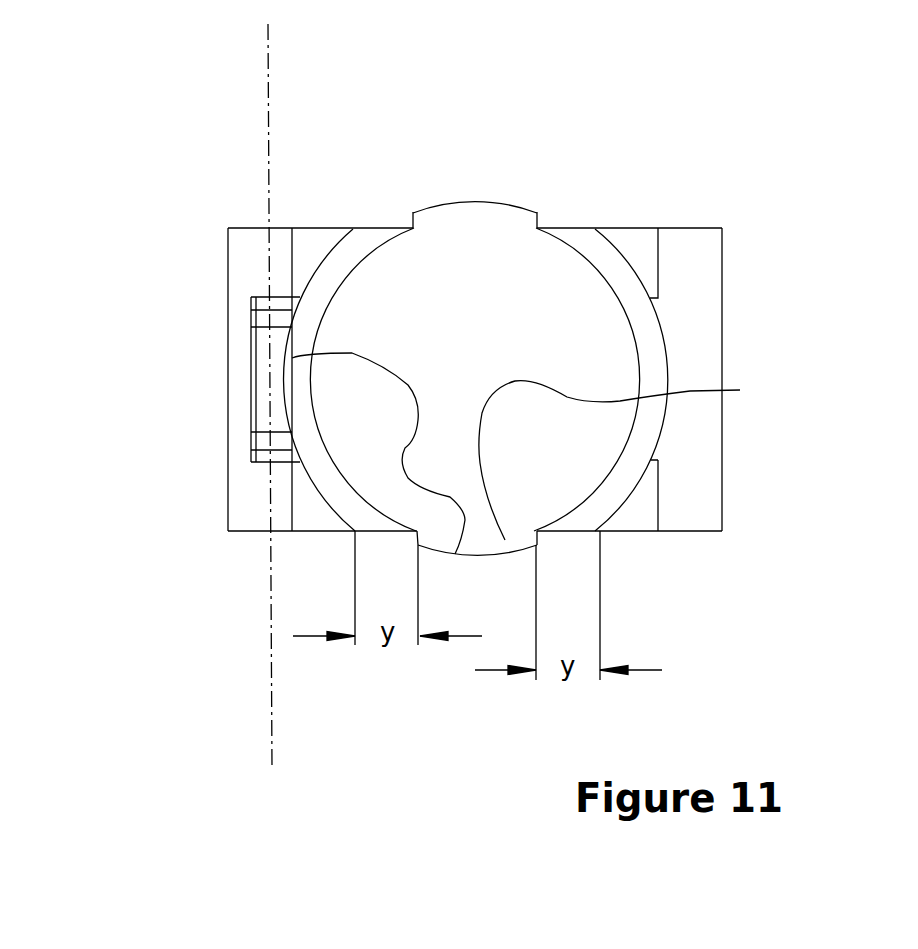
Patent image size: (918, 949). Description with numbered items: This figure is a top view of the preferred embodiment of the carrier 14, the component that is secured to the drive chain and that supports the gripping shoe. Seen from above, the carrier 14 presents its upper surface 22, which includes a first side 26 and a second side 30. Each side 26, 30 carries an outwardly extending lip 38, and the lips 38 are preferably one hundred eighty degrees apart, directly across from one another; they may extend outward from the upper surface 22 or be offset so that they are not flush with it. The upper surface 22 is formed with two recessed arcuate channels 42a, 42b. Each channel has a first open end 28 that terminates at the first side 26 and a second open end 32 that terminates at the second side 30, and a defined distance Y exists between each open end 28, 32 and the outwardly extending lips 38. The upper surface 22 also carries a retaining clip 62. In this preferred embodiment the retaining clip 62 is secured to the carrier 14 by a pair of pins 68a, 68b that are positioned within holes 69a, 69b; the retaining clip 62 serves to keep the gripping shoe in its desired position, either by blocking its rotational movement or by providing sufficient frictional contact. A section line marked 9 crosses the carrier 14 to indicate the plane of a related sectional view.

The section line 9- 9 is at (268, 24).
The carrier 14 is at (695, 247).
The upper surface 22 is at (583, 450).
The first side 26 is at (437, 205).
The first open end 28 is at (382, 228).
The second side 30 is at (292, 358).
The second open end 32 is at (385, 532).
The outwardly extending lip 38 is at (740, 390).
The recessed arcuate channel 42a is at (325, 277).
The recessed arcuate channel 42b is at (643, 327).
The retaining clip 62 is at (260, 417).
The pin 68a is at (253, 300).
The hole 69a is at (194, 311).
The pin 68b is at (252, 453).
The hole 69b is at (193, 481).